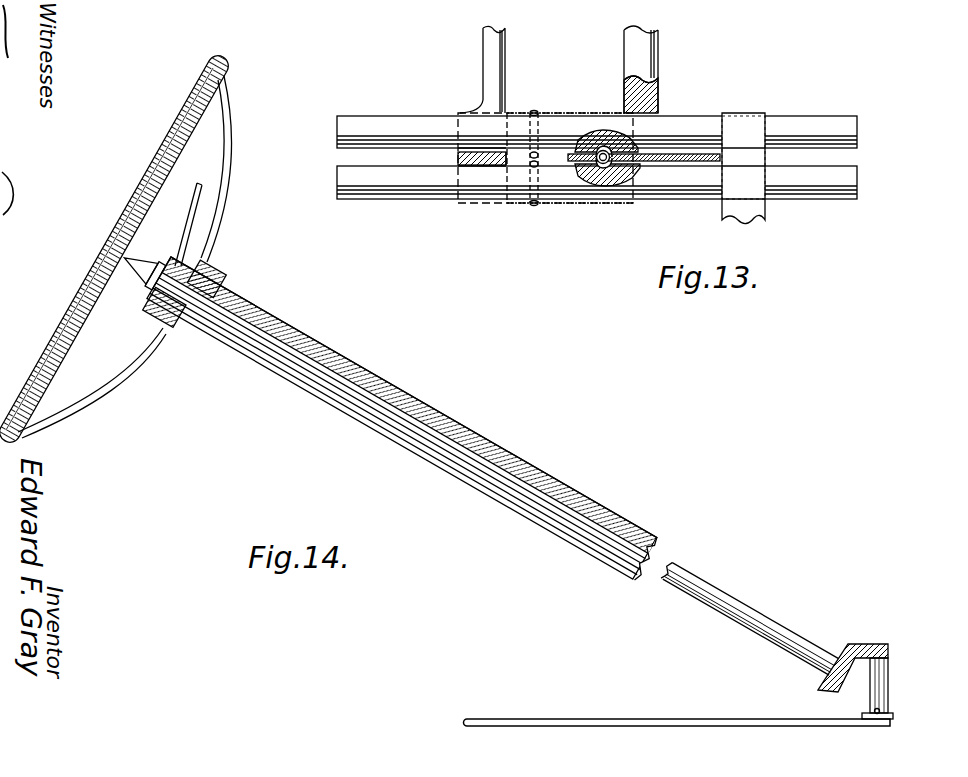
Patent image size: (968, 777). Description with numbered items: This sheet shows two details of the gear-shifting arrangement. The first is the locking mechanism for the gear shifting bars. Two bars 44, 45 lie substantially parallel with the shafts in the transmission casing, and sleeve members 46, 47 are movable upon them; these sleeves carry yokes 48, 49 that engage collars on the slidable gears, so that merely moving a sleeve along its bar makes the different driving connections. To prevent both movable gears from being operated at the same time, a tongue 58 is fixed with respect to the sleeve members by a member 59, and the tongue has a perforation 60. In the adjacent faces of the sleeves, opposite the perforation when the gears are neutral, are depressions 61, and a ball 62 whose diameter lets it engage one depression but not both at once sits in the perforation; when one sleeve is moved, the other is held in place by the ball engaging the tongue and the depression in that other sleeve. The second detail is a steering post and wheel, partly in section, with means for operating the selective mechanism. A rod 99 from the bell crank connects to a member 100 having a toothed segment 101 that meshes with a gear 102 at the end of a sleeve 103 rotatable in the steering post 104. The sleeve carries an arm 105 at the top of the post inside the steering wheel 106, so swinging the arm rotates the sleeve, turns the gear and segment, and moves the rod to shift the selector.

In FIG. 13, the bar 44 is at (398, 107).
In FIG. 13, the bar 45 is at (408, 188).
In FIG. 13, the sleeve member 46 is at (547, 100).
In FIG. 13, the sleeve member 47 is at (505, 203).
In FIG. 13, the yoke 48 is at (657, 32).
In FIG. 13, the yoke 49 is at (483, 77).
In FIG. 13, the tongue 58 is at (695, 155).
In FIG. 13, the member 59 is at (747, 125).
In FIG. 13, the perforation 60 is at (580, 180).
In FIG. 13, the depression 61 is at (590, 132).
In FIG. 13, the ball 62 is at (605, 165).
In FIG. 14, the rod 99 is at (673, 714).
In FIG. 14, the member 100 is at (893, 715).
In FIG. 14, the toothed segment 101 is at (884, 645).
In FIG. 14, the gear 102 is at (848, 645).
In FIG. 14, the sleeve 103 is at (718, 600).
In FIG. 14, the steering post 104 is at (307, 397).
In FIG. 14, the arm 105 is at (182, 240).
In FIG. 14, the steering wheel 106 is at (80, 298).